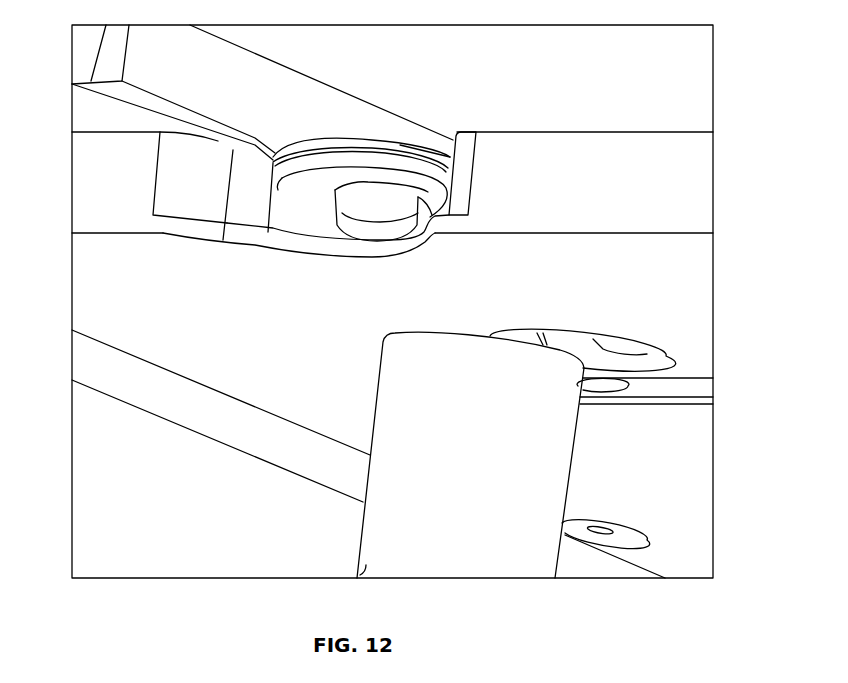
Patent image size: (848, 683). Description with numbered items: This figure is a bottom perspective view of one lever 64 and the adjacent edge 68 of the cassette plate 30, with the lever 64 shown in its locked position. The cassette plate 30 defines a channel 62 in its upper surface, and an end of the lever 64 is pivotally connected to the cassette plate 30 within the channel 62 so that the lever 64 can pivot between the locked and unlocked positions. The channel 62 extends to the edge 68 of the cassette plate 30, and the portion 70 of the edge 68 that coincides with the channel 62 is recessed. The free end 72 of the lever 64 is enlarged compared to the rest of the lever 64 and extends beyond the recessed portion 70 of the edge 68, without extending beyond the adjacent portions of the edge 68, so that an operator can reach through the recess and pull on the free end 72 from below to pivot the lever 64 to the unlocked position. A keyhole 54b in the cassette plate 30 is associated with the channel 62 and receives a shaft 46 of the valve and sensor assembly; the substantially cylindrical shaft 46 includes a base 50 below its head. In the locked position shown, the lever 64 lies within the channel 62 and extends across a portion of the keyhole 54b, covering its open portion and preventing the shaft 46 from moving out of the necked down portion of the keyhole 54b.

The cassette plate 30 is at (727, 169).
The shaft 46 is at (504, 581).
The base 50 is at (360, 577).
The keyhole 54b is at (668, 355).
The channel 62 is at (200, 193).
The lever 64 is at (417, 143).
The edge 68 is at (567, 147).
The recessed portion 70 is at (310, 245).
The free end 72 is at (355, 148).